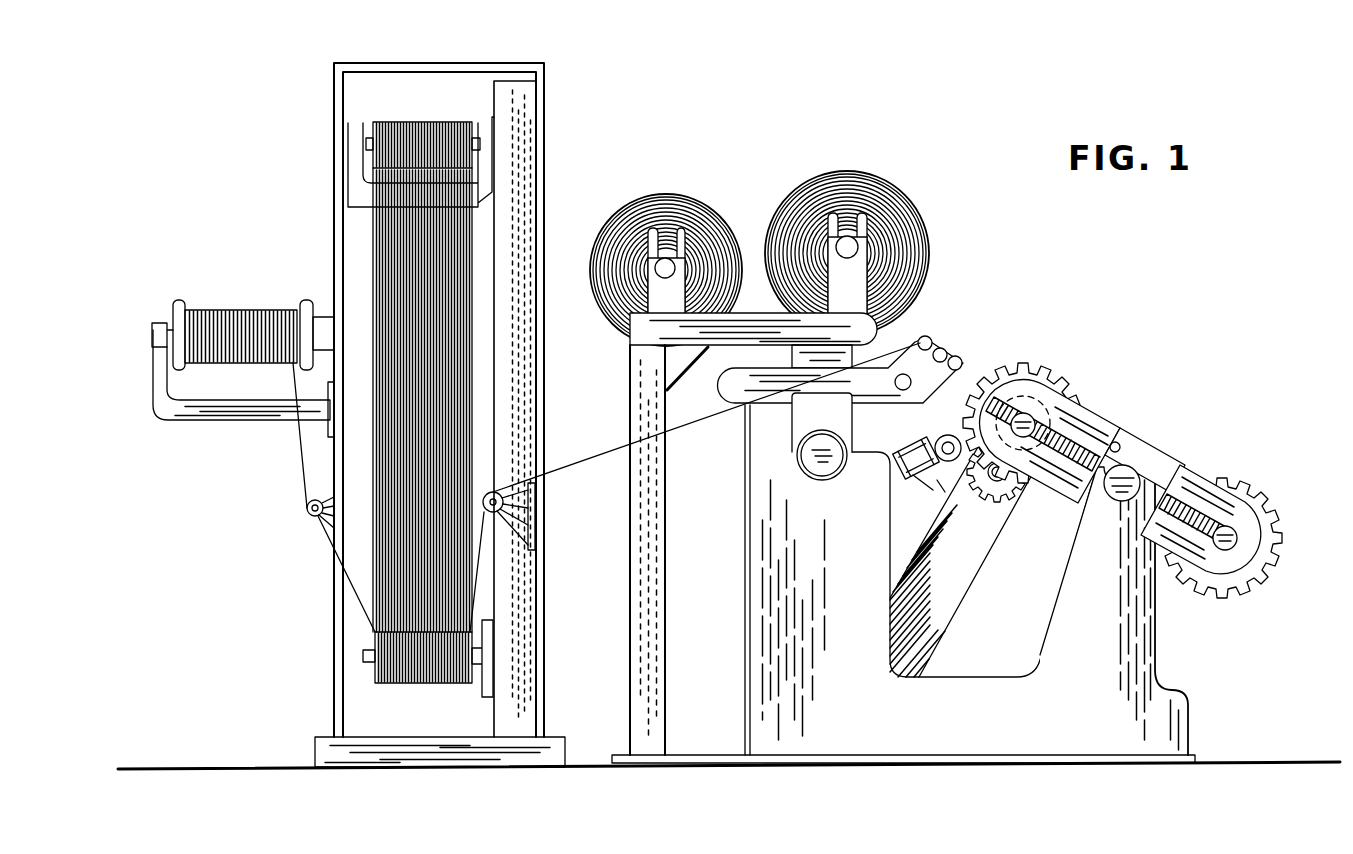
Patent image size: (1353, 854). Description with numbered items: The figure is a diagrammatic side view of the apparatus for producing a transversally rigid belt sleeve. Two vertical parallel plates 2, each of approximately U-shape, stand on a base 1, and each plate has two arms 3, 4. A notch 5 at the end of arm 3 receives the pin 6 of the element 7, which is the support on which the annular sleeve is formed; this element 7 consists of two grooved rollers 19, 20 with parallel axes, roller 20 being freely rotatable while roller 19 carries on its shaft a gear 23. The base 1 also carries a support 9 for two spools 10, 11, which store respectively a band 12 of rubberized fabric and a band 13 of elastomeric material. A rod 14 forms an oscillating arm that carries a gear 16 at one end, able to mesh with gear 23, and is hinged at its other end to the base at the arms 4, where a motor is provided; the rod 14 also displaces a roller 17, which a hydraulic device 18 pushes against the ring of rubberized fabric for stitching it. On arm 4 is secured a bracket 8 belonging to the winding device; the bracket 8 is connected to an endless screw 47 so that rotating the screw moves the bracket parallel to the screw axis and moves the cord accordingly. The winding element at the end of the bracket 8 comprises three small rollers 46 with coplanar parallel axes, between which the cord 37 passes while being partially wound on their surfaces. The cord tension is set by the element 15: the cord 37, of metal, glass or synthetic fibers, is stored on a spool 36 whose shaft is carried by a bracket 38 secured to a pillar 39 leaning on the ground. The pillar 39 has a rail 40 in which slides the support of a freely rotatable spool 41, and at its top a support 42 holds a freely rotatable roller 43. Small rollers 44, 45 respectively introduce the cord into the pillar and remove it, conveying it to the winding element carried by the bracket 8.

The base 1 is at (893, 755).
The vertical parallel plate 2 is at (953, 436).
The arm 3 is at (1133, 627).
The arm 4 is at (768, 623).
The notch 5 is at (1122, 493).
The pin 6 is at (1125, 472).
The element 7 is at (1120, 458).
The bracket 8 is at (732, 390).
The support 9 is at (650, 542).
The spool 10 is at (674, 232).
The spool 11 is at (880, 222).
The band of rubberized fabric 12 is at (690, 185).
The band of elastomeric material 13 is at (966, 280).
The rod 14 is at (955, 573).
The element for adjusting the tension of a cord 15 is at (530, 410).
The gear 16 is at (993, 487).
The roller 17 is at (940, 440).
The hydraulic device 18 is at (903, 455).
The grooved roller 19 is at (1040, 372).
The grooved roller 20 is at (1258, 492).
The gear 23 is at (1043, 385).
The spool 36 is at (260, 317).
The cord 37 is at (303, 468).
The bracket 38 is at (192, 423).
The pillar 39 is at (545, 100).
The rail 40 is at (515, 206).
The spool 41 is at (417, 667).
The support 42 is at (357, 193).
The roller 43 is at (427, 132).
The small roller 44 is at (311, 512).
The small roller 45 is at (506, 506).
The small rollers 46 is at (957, 357).
The endless screw 47 is at (825, 470).